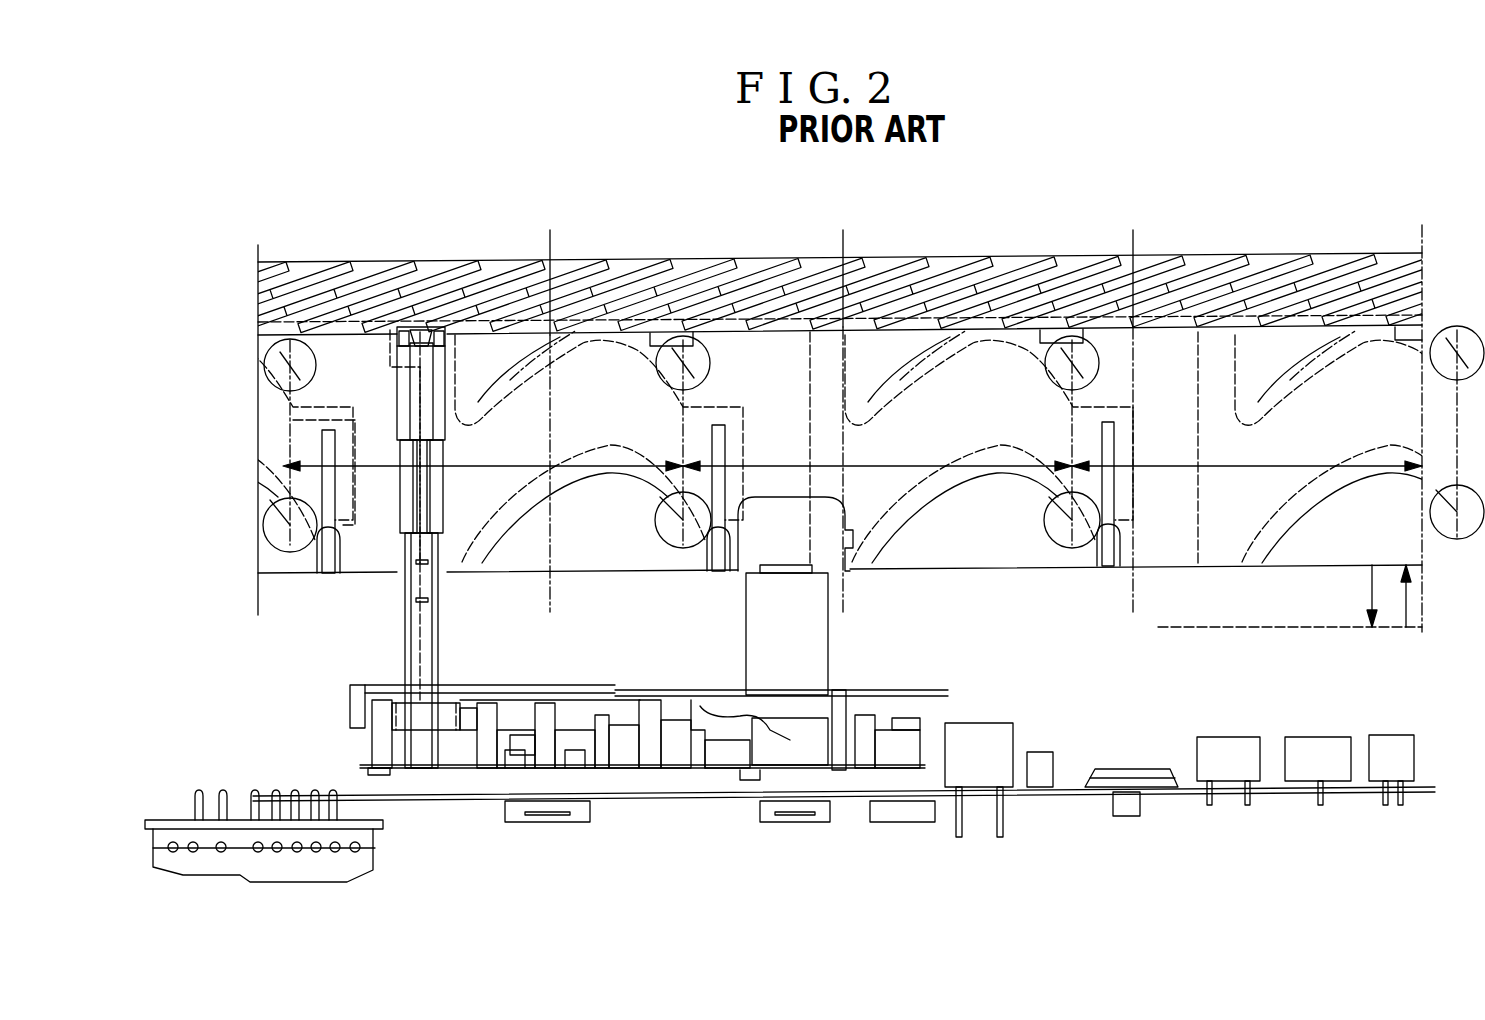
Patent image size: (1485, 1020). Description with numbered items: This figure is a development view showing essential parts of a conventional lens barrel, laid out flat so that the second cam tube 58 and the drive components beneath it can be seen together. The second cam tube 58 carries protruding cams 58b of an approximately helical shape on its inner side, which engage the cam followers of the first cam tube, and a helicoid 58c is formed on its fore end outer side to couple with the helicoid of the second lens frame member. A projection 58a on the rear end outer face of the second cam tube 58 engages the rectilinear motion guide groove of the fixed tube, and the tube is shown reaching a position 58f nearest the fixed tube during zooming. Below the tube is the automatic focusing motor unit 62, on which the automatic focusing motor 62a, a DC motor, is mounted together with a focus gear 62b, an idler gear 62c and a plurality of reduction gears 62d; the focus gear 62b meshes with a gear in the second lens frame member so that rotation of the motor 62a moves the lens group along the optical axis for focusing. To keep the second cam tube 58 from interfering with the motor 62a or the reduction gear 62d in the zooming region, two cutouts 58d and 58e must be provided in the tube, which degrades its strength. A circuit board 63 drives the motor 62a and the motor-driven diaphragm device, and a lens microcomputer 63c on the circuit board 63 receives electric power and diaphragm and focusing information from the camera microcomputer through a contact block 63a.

The second cam tube 58 is at (1240, 258).
The projection 58a is at (330, 585).
The protruding cams 58b is at (585, 342).
The helicoid 58c is at (1003, 268).
The cutout 58d is at (838, 517).
The cutout 58e is at (448, 522).
The position nearest to the fixed tube 58f is at (1425, 627).
The automatic focusing motor unit 62 is at (920, 722).
The automatic focusing motor 62a is at (828, 640).
The focus gear 62b is at (426, 327).
The idler gear 62c is at (432, 655).
The reduction gears 62d is at (520, 717).
The circuit board 63 is at (1078, 791).
The contact block 63a is at (378, 860).
The lens microcomputer 63c is at (1003, 740).